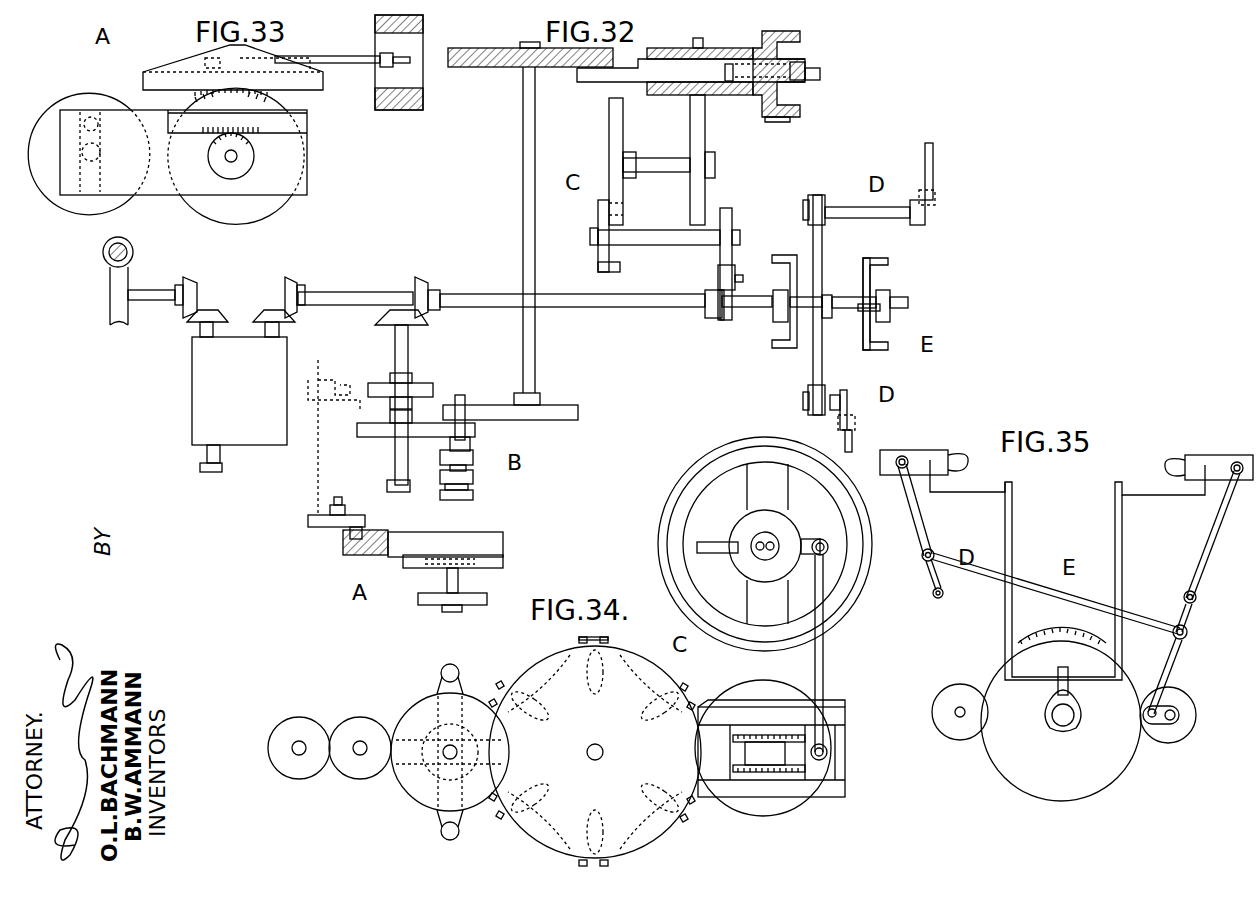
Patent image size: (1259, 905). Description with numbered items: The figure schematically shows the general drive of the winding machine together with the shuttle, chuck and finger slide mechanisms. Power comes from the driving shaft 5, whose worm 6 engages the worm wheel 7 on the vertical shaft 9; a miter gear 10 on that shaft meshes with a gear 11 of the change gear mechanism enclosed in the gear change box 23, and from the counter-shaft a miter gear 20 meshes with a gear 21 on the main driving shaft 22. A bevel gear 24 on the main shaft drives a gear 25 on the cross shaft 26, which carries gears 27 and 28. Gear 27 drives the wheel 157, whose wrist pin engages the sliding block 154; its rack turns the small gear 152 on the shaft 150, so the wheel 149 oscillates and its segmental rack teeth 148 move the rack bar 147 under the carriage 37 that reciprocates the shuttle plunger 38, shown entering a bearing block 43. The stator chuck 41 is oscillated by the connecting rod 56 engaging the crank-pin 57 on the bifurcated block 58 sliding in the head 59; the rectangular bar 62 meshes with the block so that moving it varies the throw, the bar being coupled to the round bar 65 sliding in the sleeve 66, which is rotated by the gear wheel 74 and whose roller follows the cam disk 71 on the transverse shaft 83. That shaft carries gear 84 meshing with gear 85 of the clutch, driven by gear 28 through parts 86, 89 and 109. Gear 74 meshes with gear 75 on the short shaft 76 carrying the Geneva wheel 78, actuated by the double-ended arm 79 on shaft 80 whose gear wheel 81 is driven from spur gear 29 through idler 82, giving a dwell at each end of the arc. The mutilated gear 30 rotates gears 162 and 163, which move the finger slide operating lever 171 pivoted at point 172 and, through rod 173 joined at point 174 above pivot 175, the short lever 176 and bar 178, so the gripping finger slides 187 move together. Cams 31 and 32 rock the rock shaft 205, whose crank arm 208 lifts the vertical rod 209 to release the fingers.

In FIG. 32, the driving shaft 5 is at (133, 250).
In FIG. 32, the worm 6 is at (103, 250).
In FIG. 32, the worm wheel 7 is at (112, 278).
In FIG. 32, the vertical shaft 9 is at (150, 290).
In FIG. 32, the miter gear 10 is at (192, 284).
In FIG. 32, the gear 11 is at (213, 310).
In FIG. 32, the miter gear 20 is at (270, 308).
In FIG. 32, the gear 21 is at (292, 284).
In FIG. 32, the main driving shaft 22 is at (348, 292).
In FIG. 34, the main driving shaft 22 is at (287, 765).
In FIG. 35, the main driving shaft 22 is at (1076, 715).
In FIG. 32, the gear change box 23 is at (239, 404).
In FIG. 32, the bevel gear 24 is at (412, 284).
In FIG. 32, the gear 25 is at (390, 326).
In FIG. 32, the cross shaft 26 is at (409, 366).
In FIG. 32, the gear 27 is at (435, 388).
In FIG. 32, the gear 28 is at (380, 437).
In FIG. 32, the spur gear 29 is at (725, 320).
In FIG. 34, the spur gear 29 is at (304, 726).
In FIG. 32, the mutilated gear 30 is at (812, 365).
In FIG. 35, the mutilated gear 30 is at (1112, 762).
In FIG. 32, the cam 31 is at (893, 302).
In FIG. 35, the cam 31 is at (1046, 715).
In FIG. 32, the cam 32 is at (778, 292).
In FIG. 33, the carriage 37 is at (195, 65).
In FIG. 33, the shuttle plunger 38 is at (353, 66).
In FIG. 34, the stator chuck 41 is at (700, 470).
In FIG. 33, the bearing block 43 is at (420, 56).
In FIG. 34, the connecting rod 56 is at (824, 650).
In FIG. 32, the crank-pin 57 is at (812, 82).
In FIG. 32, the bifurcated block 58 is at (805, 56).
In FIG. 34, the bifurcated block 58 is at (790, 772).
In FIG. 32, the head 59 is at (795, 110).
In FIG. 34, the head 59 is at (828, 705).
In FIG. 34, the rectangular bar 62 is at (760, 750).
In FIG. 32, the round bar 65 is at (726, 71).
In FIG. 32, the sleeve 66 is at (685, 47).
In FIG. 32, the cam disk 71 is at (508, 70).
In FIG. 32, the gear wheel 74 is at (702, 44).
In FIG. 34, the gear wheel 74 is at (765, 790).
In FIG. 32, the gear 75 is at (706, 128).
In FIG. 34, the gear 75 is at (595, 751).
In FIG. 32, the short shaft 76 is at (670, 164).
In FIG. 34, the short shaft 76 is at (604, 752).
In FIG. 32, the Geneva wheel 78 is at (610, 128).
In FIG. 34, the Geneva wheel 78 is at (580, 640).
In FIG. 32, the double-ended arm 79 is at (596, 252).
In FIG. 34, the double-ended arm 79 is at (447, 688).
In FIG. 32, the shaft 80 is at (668, 247).
In FIG. 34, the shaft 80 is at (447, 752).
In FIG. 32, the gear wheel 81 is at (735, 222).
In FIG. 32, the idler 82 is at (718, 276).
In FIG. 34, the idler 82 is at (358, 766).
In FIG. 32, the transverse shaft 83 is at (523, 212).
In FIG. 32, the gear 84 is at (553, 420).
In FIG. 32, the gear 85 is at (467, 408).
In FIG. 32, the clutch 86 is at (443, 470).
In FIG. 32, the hub 89 is at (476, 434).
In FIG. 32, the gear 109 is at (366, 518).
In FIG. 33, the rack bar 147 is at (268, 93).
In FIG. 33, the segmental rack teeth 148 is at (204, 95).
In FIG. 33, the wheel 149 is at (255, 210).
In FIG. 32, the wheel 149 is at (472, 605).
In FIG. 33, the shaft 150 is at (236, 158).
In FIG. 33, the small gear 152 is at (220, 160).
In FIG. 33, the sliding block 154 is at (298, 182).
In FIG. 32, the sliding block 154 is at (493, 552).
In FIG. 33, the wheel 157 is at (110, 200).
In FIG. 32, the wheel 157 is at (332, 426).
In FIG. 32, the gear 162 is at (818, 196).
In FIG. 35, the gear 162 is at (1192, 706).
In FIG. 32, the gear 163 is at (812, 408).
In FIG. 35, the gear 163 is at (942, 722).
In FIG. 35, the finger slide operating lever 171 is at (1213, 528).
In FIG. 35, the pivot point 172 is at (1197, 598).
In FIG. 35, the rod 173 is at (1190, 636).
In FIG. 35, the connection point 174 is at (922, 552).
In FIG. 35, the pivot 175 is at (933, 594).
In FIG. 35, the short lever 176 is at (918, 520).
In FIG. 35, the bar 178 is at (1088, 607).
In FIG. 35, the gripping finger slide 187 is at (912, 458).
In FIG. 35, the rock shaft 205 is at (1040, 678).
In FIG. 32, the crank arm 208 is at (866, 347).
In FIG. 35, the vertical rod 209 is at (1115, 537).